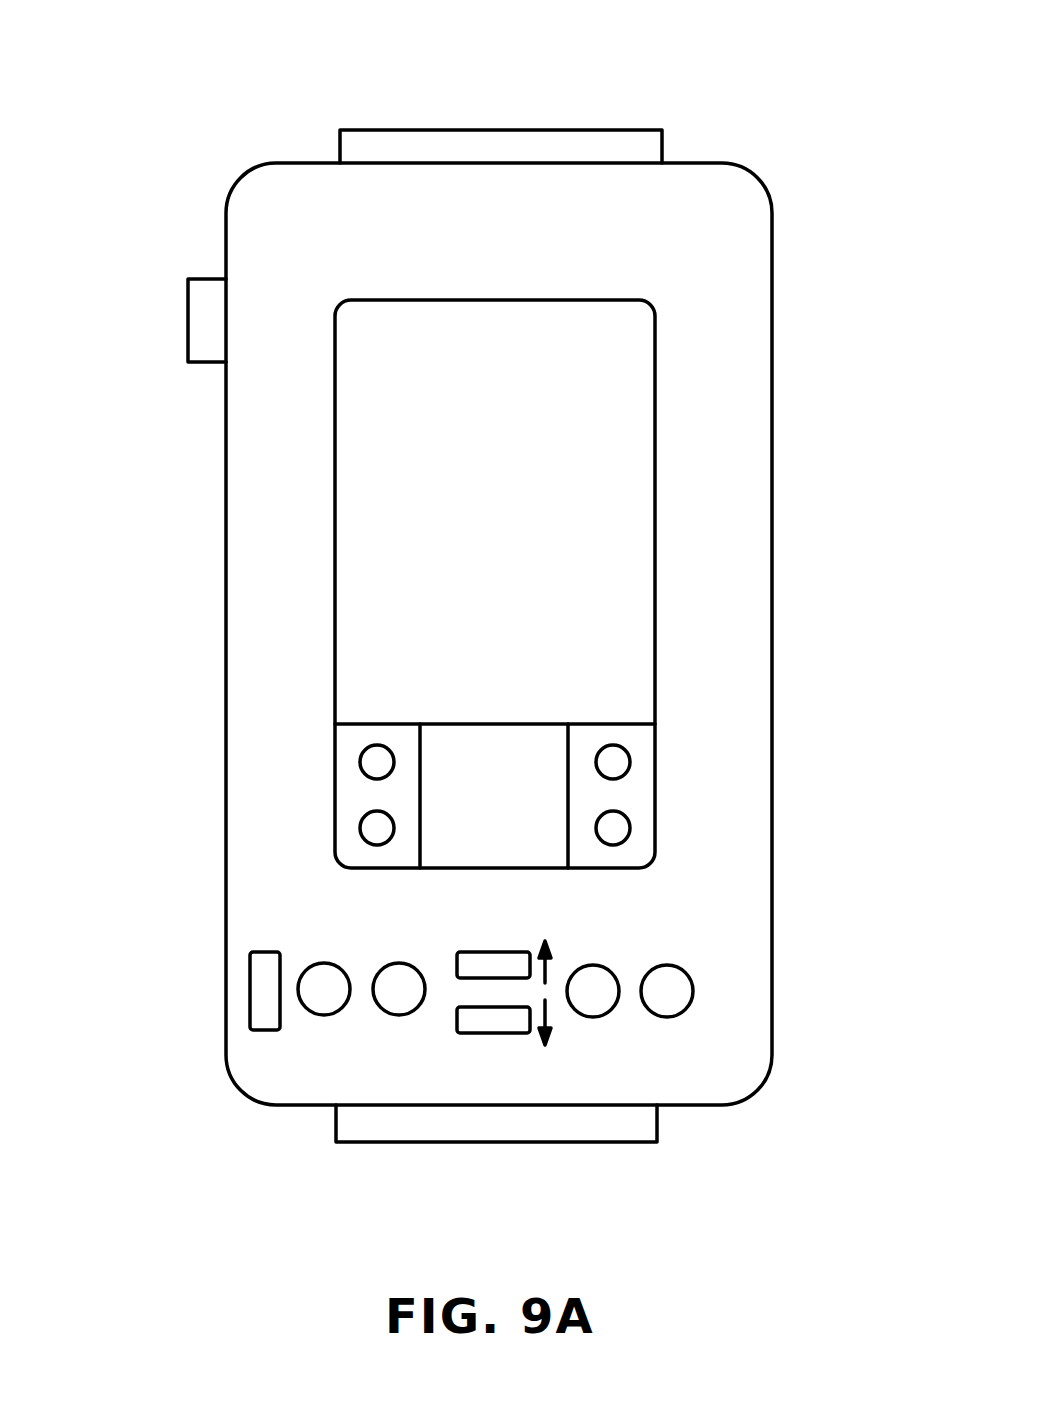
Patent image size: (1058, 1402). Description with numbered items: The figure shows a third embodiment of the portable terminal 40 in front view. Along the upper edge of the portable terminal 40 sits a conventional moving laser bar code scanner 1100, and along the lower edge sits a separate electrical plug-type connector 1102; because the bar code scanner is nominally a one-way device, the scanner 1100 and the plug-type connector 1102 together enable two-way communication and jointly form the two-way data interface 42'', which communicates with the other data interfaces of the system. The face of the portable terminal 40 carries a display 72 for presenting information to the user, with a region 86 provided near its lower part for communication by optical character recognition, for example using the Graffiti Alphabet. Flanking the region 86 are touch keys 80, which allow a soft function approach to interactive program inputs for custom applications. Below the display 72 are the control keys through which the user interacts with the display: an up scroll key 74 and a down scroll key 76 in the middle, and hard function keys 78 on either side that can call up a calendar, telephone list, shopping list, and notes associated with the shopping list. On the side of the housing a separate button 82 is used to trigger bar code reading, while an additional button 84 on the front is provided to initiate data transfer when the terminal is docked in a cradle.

The portable terminal 40 is at (772, 255).
The two-way data interface 42'' is at (497, 633).
The display 72 is at (522, 548).
The up scroll key 74 is at (457, 962).
The down scroll key 76 is at (478, 1033).
The hard function keys 78 is at (386, 1012).
The touch keys 80 is at (360, 760).
The button 82 is at (188, 322).
The button 84 is at (250, 983).
The region 86 is at (520, 812).
The moving laser bar code scanner 1100 is at (593, 130).
The electrical plug-type connector 1102 is at (503, 1143).